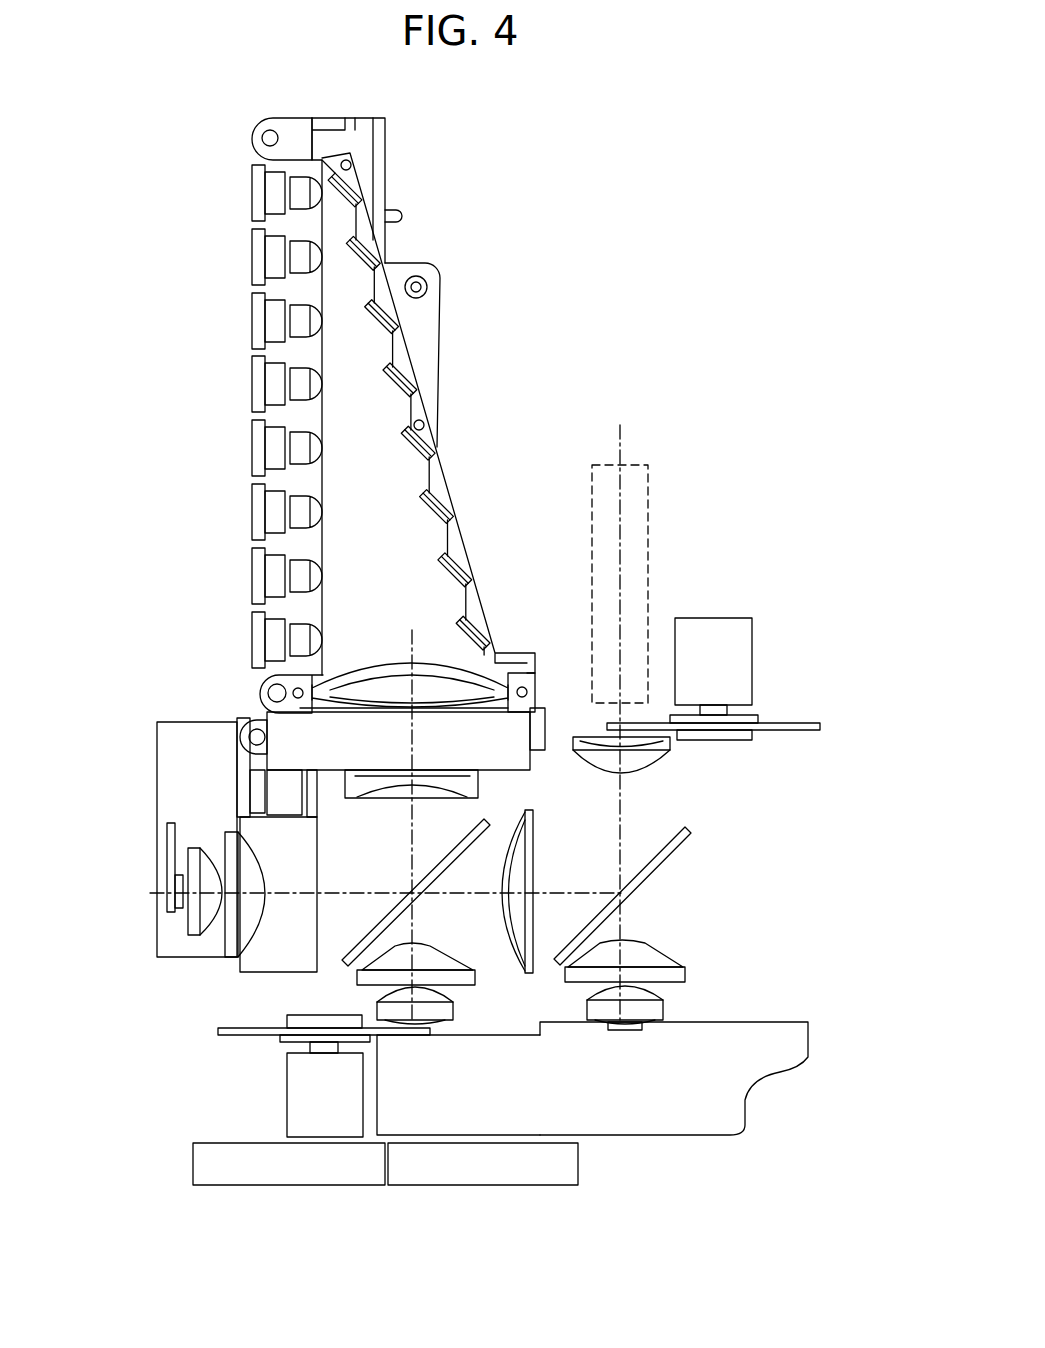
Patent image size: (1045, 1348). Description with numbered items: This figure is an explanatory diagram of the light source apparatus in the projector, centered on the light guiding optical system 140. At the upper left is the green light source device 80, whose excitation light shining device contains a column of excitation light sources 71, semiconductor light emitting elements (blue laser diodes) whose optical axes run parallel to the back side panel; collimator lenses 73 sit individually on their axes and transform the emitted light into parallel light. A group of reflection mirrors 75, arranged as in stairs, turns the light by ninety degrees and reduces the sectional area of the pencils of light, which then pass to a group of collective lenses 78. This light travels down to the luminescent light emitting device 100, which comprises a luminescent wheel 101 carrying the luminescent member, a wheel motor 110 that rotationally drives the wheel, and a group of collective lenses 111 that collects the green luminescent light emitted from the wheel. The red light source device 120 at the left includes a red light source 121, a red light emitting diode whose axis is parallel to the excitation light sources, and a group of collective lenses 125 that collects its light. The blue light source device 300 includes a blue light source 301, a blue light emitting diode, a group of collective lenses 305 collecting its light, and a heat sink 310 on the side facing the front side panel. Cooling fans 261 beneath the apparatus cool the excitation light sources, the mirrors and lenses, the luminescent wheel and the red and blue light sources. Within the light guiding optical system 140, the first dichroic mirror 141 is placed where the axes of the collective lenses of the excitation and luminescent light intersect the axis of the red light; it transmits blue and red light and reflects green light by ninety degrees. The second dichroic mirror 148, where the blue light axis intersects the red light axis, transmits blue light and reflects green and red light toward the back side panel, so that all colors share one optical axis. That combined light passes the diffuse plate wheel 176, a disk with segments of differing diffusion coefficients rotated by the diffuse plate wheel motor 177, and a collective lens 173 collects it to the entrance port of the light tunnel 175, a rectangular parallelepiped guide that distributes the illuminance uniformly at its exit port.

The excitation light sources 71 is at (230, 226).
The green light source device 80 is at (216, 404).
The collimator lenses 73 is at (290, 320).
The group of reflection mirrors 75 is at (400, 448).
The group of collective lenses 78 is at (443, 690).
The red light source device 120 is at (180, 930).
The red light source 121 is at (180, 882).
The group of collective lenses 125 is at (208, 833).
The first dichroic mirror 141 is at (392, 918).
The second dichroic mirror 148 is at (660, 875).
The group of collective lenses 111 is at (463, 988).
The group of collective lenses 305 is at (668, 940).
The light guiding optical system 140 is at (712, 975).
The luminescent wheel 101 is at (232, 1033).
The luminescent light emitting device 100 is at (315, 1124).
The wheel motor 110 is at (300, 1110).
The cooling fan 261 is at (398, 1167).
The heat sink 310 is at (437, 1093).
The blue light source device 300 is at (629, 1054).
The blue light source 301 is at (632, 1027).
The light tunnel 175 is at (637, 558).
The diffuse plate wheel motor 177 is at (720, 656).
The diffuse plate wheel 176 is at (792, 725).
The collective lens 173 is at (643, 760).